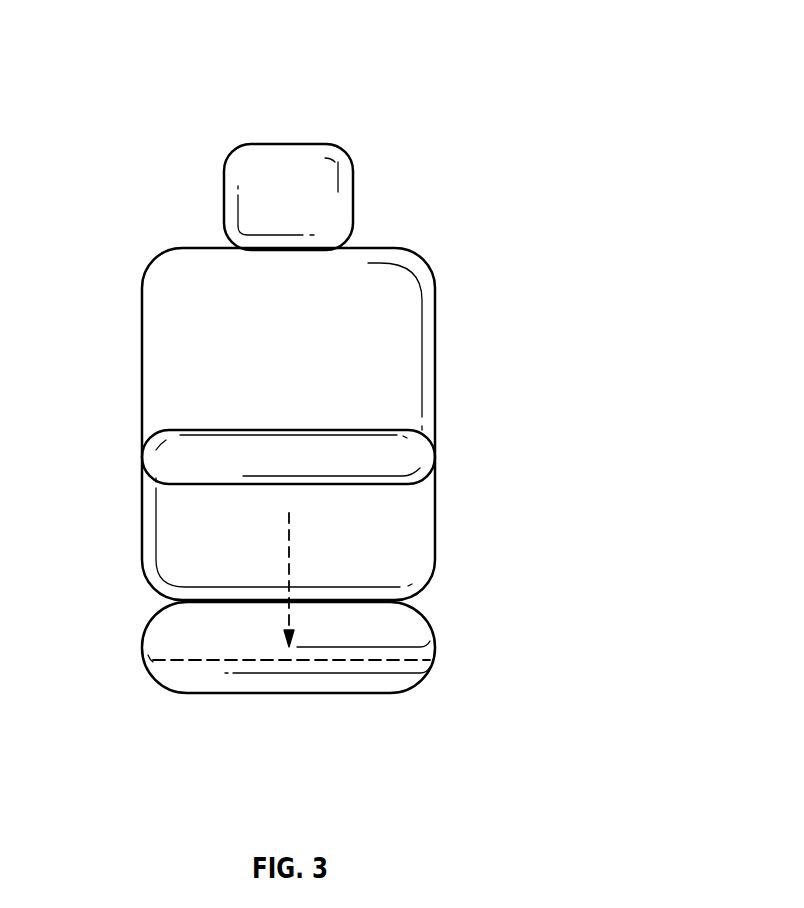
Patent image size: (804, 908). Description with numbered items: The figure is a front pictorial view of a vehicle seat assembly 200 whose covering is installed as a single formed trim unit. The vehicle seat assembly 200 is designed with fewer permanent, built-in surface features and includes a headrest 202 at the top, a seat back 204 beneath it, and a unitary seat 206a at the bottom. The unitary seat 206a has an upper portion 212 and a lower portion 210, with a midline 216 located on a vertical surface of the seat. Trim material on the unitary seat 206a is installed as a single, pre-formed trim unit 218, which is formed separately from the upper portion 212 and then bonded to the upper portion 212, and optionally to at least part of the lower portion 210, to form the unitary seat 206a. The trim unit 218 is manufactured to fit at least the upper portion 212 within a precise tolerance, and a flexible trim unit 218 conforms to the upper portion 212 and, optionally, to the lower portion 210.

The vehicle seat assembly 200 is at (398, 63).
The headrest 202 is at (345, 188).
The seat back 204 is at (418, 347).
The trim unit 218 is at (418, 457).
The unitary seat 206a is at (447, 648).
The upper portion 212 is at (163, 630).
The lower portion 210 is at (202, 677).
The midline 216 is at (387, 662).